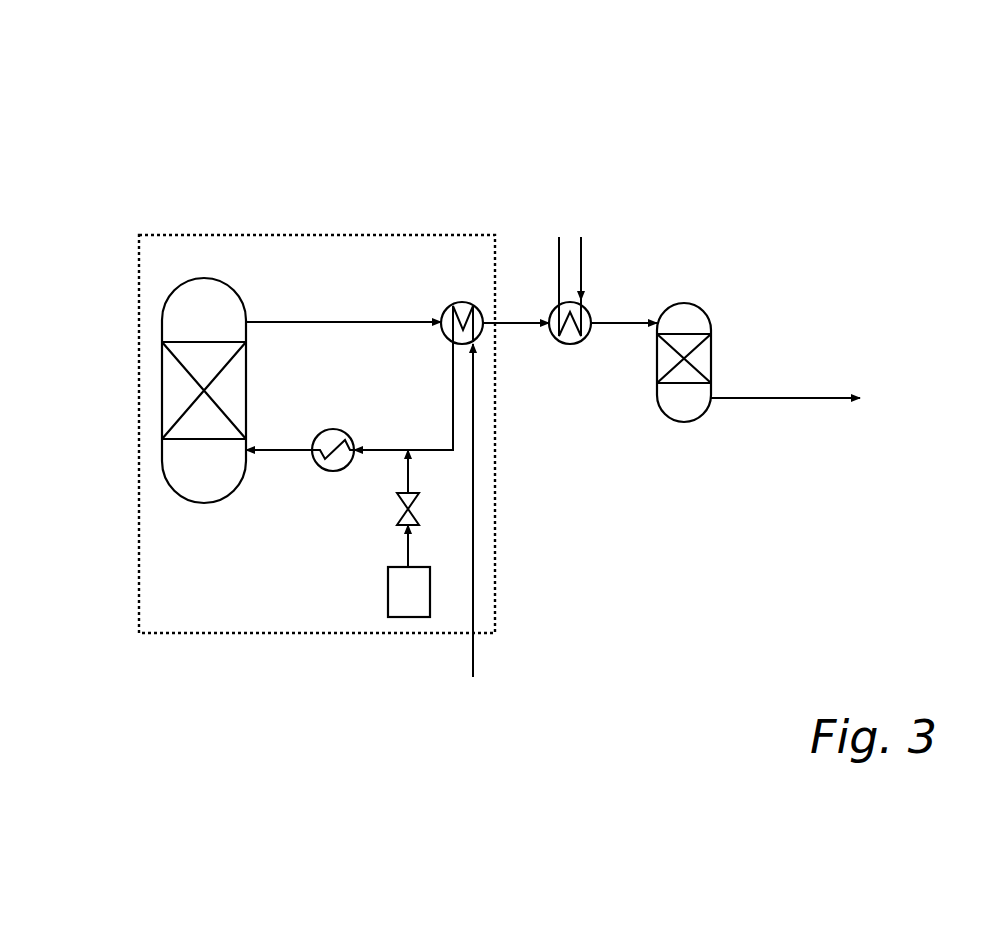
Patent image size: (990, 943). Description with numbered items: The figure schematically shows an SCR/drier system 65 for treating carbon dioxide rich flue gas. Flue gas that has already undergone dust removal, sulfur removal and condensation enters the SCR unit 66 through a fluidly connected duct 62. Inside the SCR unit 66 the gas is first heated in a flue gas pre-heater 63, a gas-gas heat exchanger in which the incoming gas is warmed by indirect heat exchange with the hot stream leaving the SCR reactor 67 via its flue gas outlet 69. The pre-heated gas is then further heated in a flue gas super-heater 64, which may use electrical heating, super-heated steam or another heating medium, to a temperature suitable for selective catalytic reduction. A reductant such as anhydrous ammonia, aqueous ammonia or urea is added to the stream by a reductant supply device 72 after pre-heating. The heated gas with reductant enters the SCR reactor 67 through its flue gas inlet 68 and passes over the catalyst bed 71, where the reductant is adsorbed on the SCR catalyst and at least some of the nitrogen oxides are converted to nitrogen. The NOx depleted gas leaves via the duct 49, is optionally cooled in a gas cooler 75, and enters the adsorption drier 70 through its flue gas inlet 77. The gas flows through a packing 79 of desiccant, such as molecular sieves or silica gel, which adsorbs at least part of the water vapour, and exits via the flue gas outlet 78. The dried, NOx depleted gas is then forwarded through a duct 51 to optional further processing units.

The SCR/drier system 65 is at (602, 140).
The SCR unit 66 is at (323, 236).
The SCR reactor 67 is at (197, 504).
The catalyst bed 71 is at (237, 396).
The flue gas outlet 69 is at (248, 318).
The flue gas inlet 68 is at (253, 452).
The flue gas pre-heater 63 is at (438, 331).
The flue gas super-heater 64 is at (333, 471).
The reductant supply device 72 is at (388, 578).
The duct 62 is at (470, 640).
The duct 49 is at (505, 325).
The gas cooler 75 is at (568, 344).
The flue gas inlet 77 is at (657, 321).
The adsorption drier 70 is at (683, 421).
The packing 79 is at (700, 360).
The flue gas outlet 78 is at (712, 400).
The duct 51 is at (805, 398).